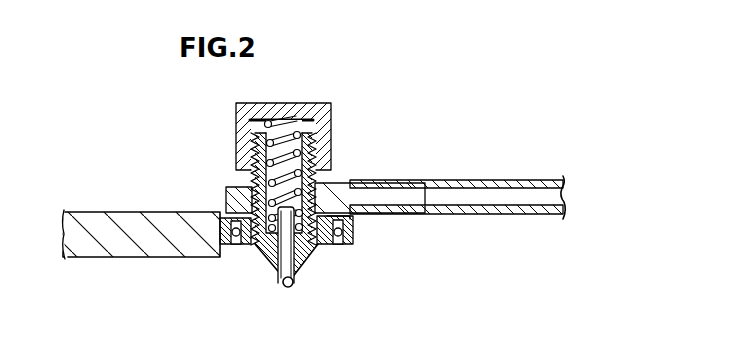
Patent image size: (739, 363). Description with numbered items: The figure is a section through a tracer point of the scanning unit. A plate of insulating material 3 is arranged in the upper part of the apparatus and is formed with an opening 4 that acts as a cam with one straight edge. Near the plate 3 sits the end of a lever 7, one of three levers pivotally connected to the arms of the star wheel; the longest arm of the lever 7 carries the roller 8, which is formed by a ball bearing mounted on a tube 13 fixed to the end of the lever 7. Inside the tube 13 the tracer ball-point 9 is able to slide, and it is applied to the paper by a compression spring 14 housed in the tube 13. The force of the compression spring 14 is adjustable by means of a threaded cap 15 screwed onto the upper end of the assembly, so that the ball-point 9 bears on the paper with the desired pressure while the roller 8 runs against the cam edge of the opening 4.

The plate of insulating material 3 is at (103, 222).
The opening 4 is at (219, 200).
The lever 7 is at (498, 180).
The roller 8 is at (236, 250).
The tracer ball-point 9 is at (296, 275).
The tube 13 is at (318, 184).
The compression spring 14 is at (252, 148).
The threaded cap 15 is at (318, 108).